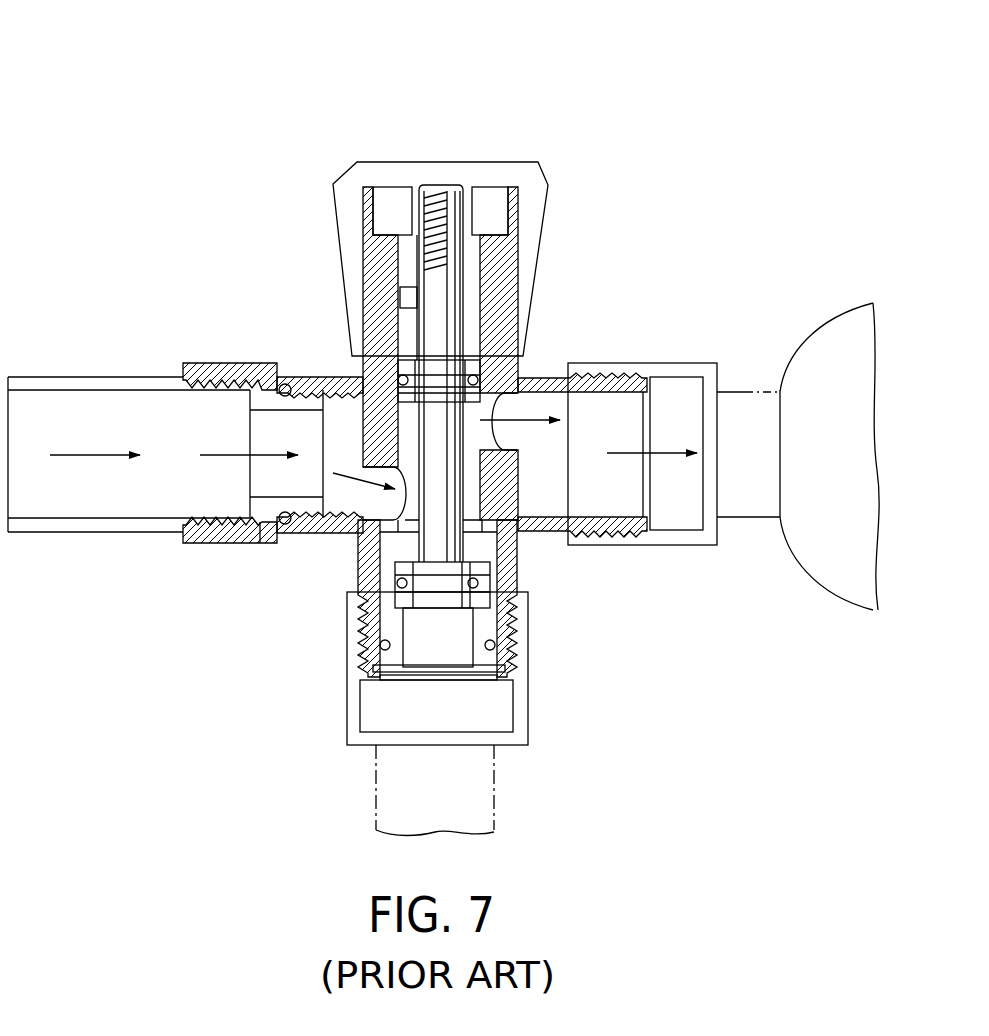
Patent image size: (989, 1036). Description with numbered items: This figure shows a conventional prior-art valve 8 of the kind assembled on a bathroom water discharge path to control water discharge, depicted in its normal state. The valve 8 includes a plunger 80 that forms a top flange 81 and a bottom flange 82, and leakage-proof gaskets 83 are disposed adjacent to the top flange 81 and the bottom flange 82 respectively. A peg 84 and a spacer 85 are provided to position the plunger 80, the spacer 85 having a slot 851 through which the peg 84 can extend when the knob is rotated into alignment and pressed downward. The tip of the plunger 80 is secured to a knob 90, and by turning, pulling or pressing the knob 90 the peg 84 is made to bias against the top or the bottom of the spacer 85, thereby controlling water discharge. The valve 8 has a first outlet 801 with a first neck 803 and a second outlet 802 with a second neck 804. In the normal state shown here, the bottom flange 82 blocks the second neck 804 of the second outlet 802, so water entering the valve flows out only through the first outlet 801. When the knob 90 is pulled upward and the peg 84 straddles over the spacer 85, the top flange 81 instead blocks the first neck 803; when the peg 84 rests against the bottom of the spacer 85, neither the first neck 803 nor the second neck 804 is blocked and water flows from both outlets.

The valve 8 is at (62, 40).
The plunger 80 is at (367, 318).
The first outlet 801 is at (622, 423).
The second outlet 802 is at (450, 652).
The first neck 803 is at (503, 415).
The second neck 804 is at (510, 632).
The top flange 81 is at (493, 325).
The bottom flange 82 is at (483, 573).
The leakage-proof gaskets 83 is at (400, 378).
The peg 84 is at (412, 297).
The spacer 85 is at (393, 208).
The slot 851 is at (492, 207).
The knob 90 is at (438, 172).